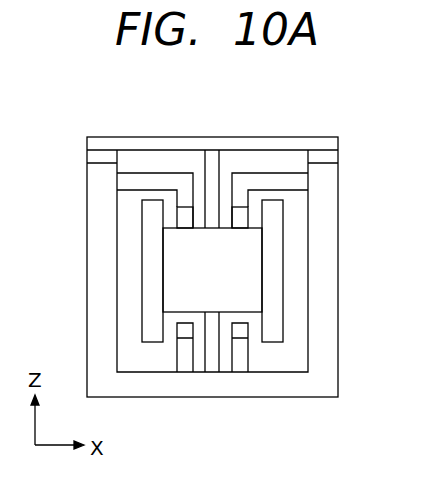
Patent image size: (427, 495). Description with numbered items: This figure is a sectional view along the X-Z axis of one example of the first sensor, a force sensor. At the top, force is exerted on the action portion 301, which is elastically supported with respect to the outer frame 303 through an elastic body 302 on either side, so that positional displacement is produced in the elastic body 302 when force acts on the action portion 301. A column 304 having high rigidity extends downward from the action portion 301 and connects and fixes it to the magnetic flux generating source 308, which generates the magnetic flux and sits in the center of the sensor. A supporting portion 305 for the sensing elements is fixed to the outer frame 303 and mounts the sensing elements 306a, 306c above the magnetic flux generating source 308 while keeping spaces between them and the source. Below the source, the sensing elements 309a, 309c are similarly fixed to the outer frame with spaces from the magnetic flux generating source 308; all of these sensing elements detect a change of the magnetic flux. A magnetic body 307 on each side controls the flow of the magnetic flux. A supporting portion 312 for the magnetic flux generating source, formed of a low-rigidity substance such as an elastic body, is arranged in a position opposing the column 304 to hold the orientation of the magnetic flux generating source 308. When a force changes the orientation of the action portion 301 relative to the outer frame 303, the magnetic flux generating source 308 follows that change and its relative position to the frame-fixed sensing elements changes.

The action portion 301 is at (318, 140).
The elastic body 302 is at (100, 158).
The outer frame 303 is at (315, 392).
The column 304 is at (213, 163).
The supporting portion for the sensing element 305 is at (153, 182).
The sensing element 306a is at (187, 219).
The sensing element 306c is at (243, 218).
The magnetic body 307 is at (267, 288).
The magnetic flux generating source 308 is at (240, 267).
The sensing element 309a is at (185, 332).
The sensing element 309c is at (242, 332).
The supporting portion for the magnetic flux generating source 312 is at (212, 360).